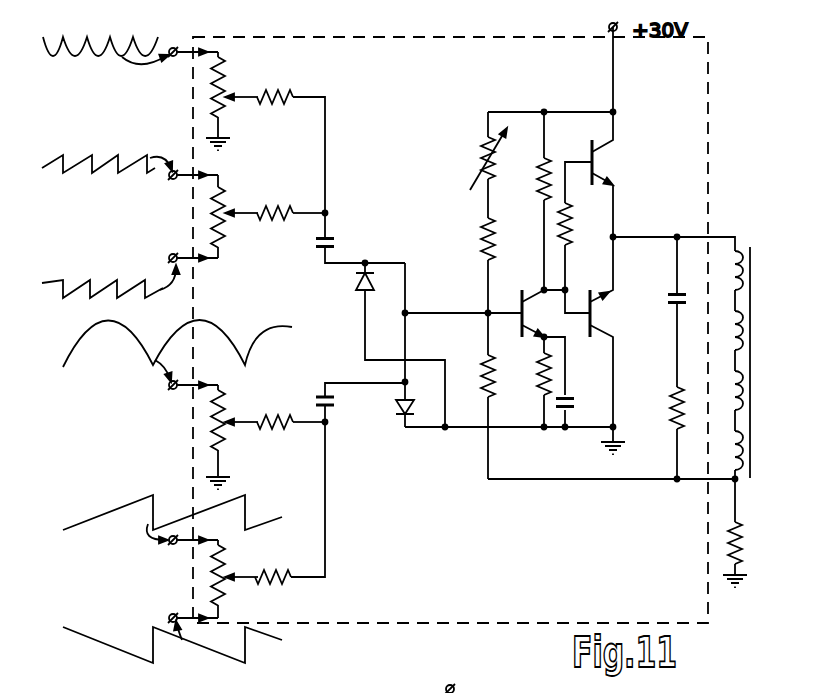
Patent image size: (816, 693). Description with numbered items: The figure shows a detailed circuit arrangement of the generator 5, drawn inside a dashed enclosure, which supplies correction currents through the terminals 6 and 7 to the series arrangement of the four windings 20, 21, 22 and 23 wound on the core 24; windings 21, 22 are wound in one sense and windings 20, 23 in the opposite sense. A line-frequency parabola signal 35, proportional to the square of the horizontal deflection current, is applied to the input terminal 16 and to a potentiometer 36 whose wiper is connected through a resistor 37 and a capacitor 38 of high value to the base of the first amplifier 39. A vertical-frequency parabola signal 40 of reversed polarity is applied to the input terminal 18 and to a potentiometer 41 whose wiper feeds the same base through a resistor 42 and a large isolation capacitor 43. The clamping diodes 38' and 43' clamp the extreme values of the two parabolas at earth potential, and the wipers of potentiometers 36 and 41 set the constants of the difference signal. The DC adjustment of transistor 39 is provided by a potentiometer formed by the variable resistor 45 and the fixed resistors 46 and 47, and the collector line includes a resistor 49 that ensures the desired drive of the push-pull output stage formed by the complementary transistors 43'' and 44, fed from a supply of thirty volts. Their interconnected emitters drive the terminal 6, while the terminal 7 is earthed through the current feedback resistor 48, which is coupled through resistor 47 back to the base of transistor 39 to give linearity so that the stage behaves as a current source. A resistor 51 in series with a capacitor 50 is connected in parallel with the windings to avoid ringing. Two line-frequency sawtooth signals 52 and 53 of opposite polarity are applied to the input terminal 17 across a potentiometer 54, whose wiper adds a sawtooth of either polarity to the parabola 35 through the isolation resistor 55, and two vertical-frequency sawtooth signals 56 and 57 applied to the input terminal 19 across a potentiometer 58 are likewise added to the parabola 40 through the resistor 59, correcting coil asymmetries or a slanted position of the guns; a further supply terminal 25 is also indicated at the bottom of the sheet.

The generator 5 is at (712, 603).
The terminal 6 is at (690, 329).
The terminal 7 is at (740, 482).
The input terminal 16 is at (222, 53).
The input terminal 17 is at (175, 254).
The input terminal 18 is at (173, 391).
The input terminal 19 is at (173, 613).
The winding 20 is at (731, 264).
The winding 21 is at (731, 322).
The winding 22 is at (732, 392).
The winding 23 is at (728, 437).
The core 24 is at (751, 252).
The supply terminal 25 is at (322, 686).
The parabola signal 35 is at (76, 58).
The potentiometer 36 is at (211, 90).
The resistor 37 is at (283, 90).
The capacitor 38 is at (360, 231).
The clamping diode 38' is at (379, 344).
The first amplifier 39 is at (536, 312).
The parabola signal 40 is at (143, 345).
The potentiometer 41 is at (225, 442).
The resistor 42 is at (276, 412).
The isolation capacitor 43 is at (360, 406).
The clamping diode 43' is at (405, 425).
The transistor 43'' is at (628, 150).
The transistor 44 is at (600, 314).
The variable resistor 45 is at (486, 153).
The resistor 46 is at (485, 241).
The resistor 47 is at (497, 382).
The current feedback resistor 48 is at (730, 544).
The resistor 49 is at (573, 238).
The capacitor 50 is at (668, 295).
The resistor 51 is at (669, 408).
The sawtooth signal 52 is at (97, 154).
The sawtooth signal 53 is at (102, 306).
The potentiometer 54 is at (223, 191).
The isolation resistor 55 is at (288, 206).
The sawtooth signal 56 is at (133, 500).
The sawtooth signal 57 is at (122, 645).
The potentiometer 58 is at (225, 561).
The resistor 59 is at (288, 586).